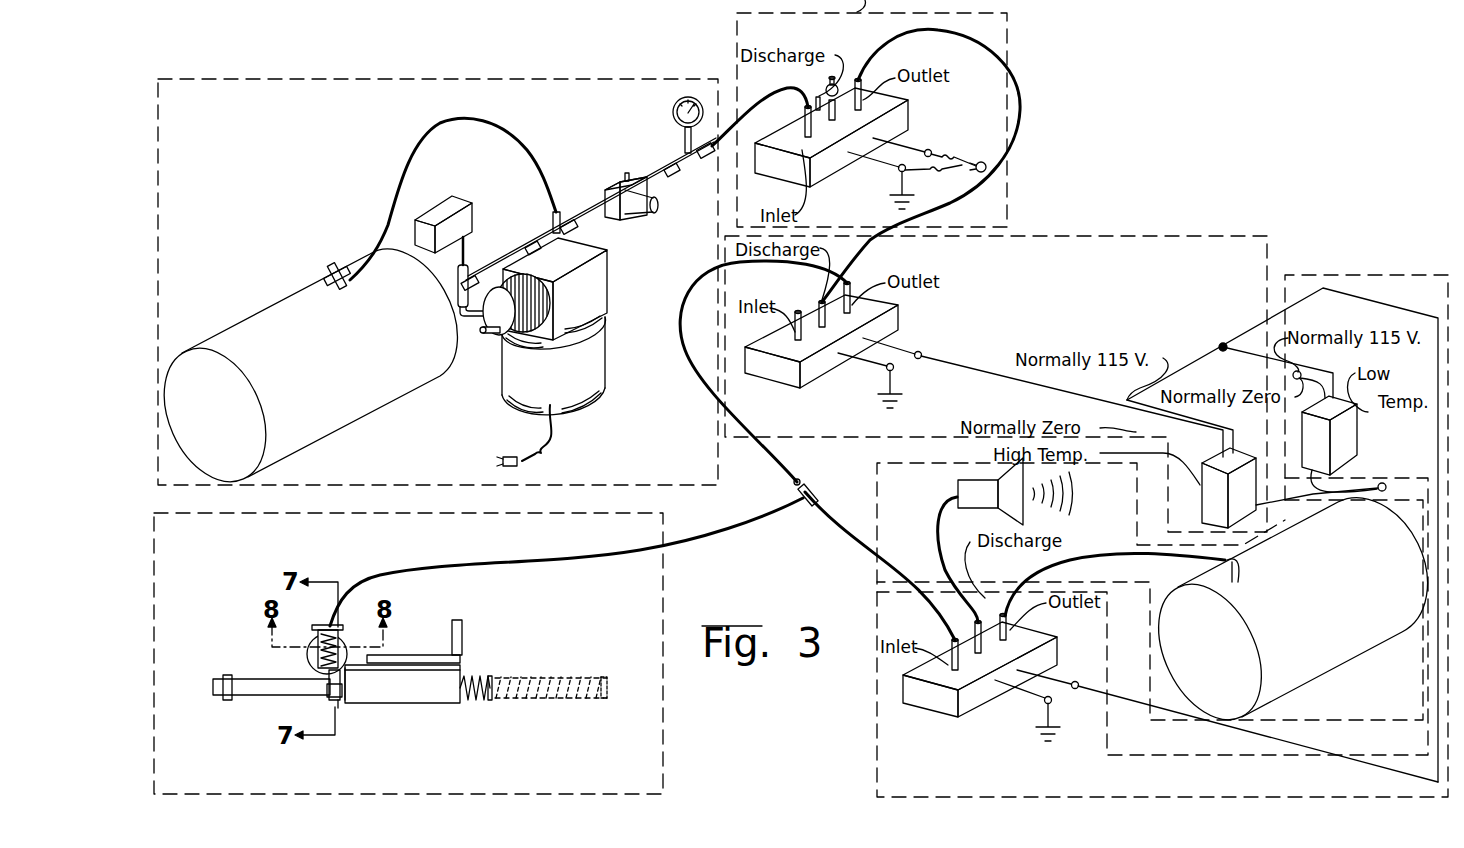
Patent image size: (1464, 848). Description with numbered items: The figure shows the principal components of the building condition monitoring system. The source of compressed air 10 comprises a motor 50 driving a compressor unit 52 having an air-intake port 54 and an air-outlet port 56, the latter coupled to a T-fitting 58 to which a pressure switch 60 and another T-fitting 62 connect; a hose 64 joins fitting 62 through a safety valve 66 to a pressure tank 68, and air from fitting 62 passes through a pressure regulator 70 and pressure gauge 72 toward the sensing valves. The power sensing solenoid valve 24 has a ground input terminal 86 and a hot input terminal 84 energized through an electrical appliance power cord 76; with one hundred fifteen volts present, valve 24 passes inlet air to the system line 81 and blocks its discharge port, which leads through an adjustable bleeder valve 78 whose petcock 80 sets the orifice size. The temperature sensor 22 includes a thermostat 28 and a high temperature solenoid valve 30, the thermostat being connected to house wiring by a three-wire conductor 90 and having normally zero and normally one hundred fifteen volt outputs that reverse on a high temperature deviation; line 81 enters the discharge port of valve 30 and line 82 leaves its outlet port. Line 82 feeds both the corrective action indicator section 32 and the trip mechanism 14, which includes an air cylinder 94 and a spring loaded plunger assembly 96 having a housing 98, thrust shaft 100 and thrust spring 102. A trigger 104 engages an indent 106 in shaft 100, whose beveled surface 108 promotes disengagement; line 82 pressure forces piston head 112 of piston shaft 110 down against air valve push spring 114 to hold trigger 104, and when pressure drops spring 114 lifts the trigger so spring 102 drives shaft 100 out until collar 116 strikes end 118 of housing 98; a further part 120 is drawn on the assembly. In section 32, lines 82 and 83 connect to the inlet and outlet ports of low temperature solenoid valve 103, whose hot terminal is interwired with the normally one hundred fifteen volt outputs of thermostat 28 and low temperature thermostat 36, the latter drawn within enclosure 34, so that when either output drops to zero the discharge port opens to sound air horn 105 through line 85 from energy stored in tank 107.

The source of compressed air 10 is at (495, 78).
The trip mechanism 14 is at (664, 747).
The temperature sensor 22 is at (1070, 236).
The solenoid valve 24 is at (778, 180).
The thermostat 28 is at (1213, 511).
The high temperature solenoid valve 30 is at (898, 320).
The corrective action indicator section 32 is at (876, 505).
The sensor enclosure 34 is at (1362, 275).
The low temperature thermostat 36 is at (1347, 451).
The motor 50 is at (602, 368).
The compressor unit 52 is at (603, 280).
The air-intake port 54 is at (470, 333).
The air-outlet port 56 is at (480, 322).
The T-fitting 58 is at (466, 268).
The pressure switch 60 is at (455, 196).
The T-fitting 62 is at (557, 211).
The hose 64 is at (428, 128).
The safety valve 66 is at (320, 275).
The pressure tank 68 is at (250, 337).
The pressure regulator 70 is at (620, 178).
The pressure gauge 72 is at (672, 118).
The electrical appliance power cord 76 is at (975, 164).
The adjustable bleeder valve 78 is at (828, 86).
The petcock 80 is at (778, 91).
The system line 81 is at (1025, 101).
The line 82 is at (722, 535).
The line 83 is at (938, 543).
The hot input terminal 84 is at (928, 149).
The line 85 is at (1104, 553).
The ground input terminal 86 is at (880, 165).
The three-wire conductor 90 is at (1384, 483).
The air cylinder 94 is at (255, 637).
The spring loaded plunger assembly 96 is at (416, 722).
The housing 98 is at (388, 704).
The thrust shaft 100 is at (250, 696).
The thrust spring 102 is at (470, 672).
The low temperature solenoid valve 103 is at (917, 710).
The trigger 104 is at (330, 680).
The air horn 105 is at (958, 485).
The indent 106 is at (350, 697).
The tank 107 is at (1322, 657).
The beveled surface 108 is at (333, 698).
The piston shaft 110 is at (312, 664).
The piston head 112 is at (367, 612).
The air valve push spring 114 is at (313, 640).
The collar 116 is at (226, 678).
The end 118 is at (340, 700).
The tab 120 is at (455, 632).